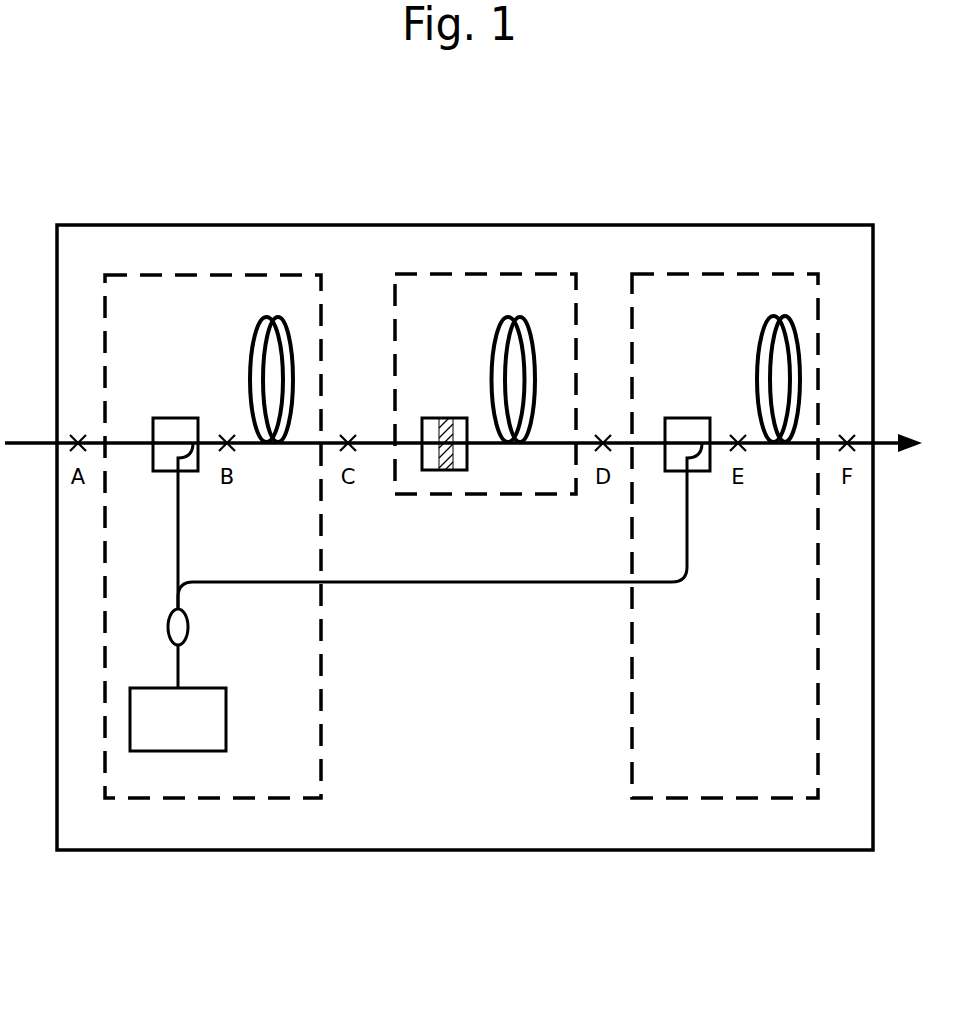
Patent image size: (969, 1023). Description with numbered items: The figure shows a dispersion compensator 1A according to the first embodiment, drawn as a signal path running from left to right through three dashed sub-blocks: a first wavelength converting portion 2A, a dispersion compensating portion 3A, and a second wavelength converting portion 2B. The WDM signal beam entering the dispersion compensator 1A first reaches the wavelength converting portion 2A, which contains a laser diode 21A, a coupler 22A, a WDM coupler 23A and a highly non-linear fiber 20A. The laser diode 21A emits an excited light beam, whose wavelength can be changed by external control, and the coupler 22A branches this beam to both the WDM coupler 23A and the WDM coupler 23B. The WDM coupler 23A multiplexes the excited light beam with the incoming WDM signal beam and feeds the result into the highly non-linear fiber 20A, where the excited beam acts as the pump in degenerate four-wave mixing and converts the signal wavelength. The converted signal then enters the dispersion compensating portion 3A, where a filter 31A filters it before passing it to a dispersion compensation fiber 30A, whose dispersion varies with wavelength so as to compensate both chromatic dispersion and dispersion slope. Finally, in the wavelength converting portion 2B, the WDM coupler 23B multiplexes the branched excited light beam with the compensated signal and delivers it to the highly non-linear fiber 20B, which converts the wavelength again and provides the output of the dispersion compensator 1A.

The dispersion compensator 1A is at (697, 225).
The wavelength converting portion 2A is at (322, 690).
The wavelength converting portion 2B is at (632, 702).
The dispersion compensating portion 3A is at (490, 494).
The highly non-linear fiber 20A is at (250, 380).
The highly non-linear fiber 20B is at (757, 380).
The laser diode 21A is at (226, 725).
The coupler 22A is at (187, 630).
The WDM coupler 23A is at (180, 418).
The WDM coupler 23B is at (692, 418).
The dispersion compensation fiber 30A is at (492, 340).
The filter 31A is at (452, 418).